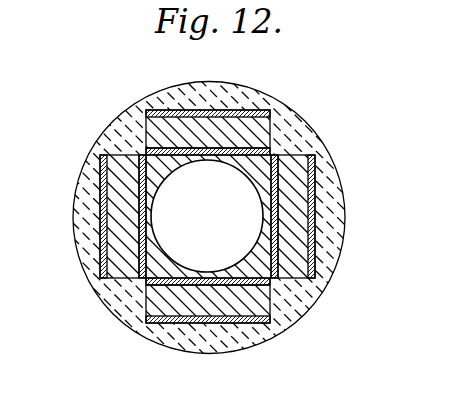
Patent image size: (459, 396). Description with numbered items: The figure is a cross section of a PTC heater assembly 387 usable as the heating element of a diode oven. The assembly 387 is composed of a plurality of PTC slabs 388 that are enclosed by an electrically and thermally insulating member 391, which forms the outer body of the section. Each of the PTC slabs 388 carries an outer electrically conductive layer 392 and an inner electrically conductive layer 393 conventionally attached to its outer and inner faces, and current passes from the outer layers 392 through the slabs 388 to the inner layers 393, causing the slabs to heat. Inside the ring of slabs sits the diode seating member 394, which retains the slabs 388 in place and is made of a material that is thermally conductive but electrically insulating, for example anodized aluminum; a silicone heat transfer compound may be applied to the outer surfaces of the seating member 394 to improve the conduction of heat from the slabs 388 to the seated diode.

The PTC heater assembly 387 is at (108, 103).
The PTC slabs 388 is at (183, 123).
The electrically and thermally insulating member 391 is at (115, 137).
The outer electrically conductive layers 392 is at (245, 112).
The inner electrically conductive layers 393 is at (277, 161).
The diode seating member 394 is at (257, 263).